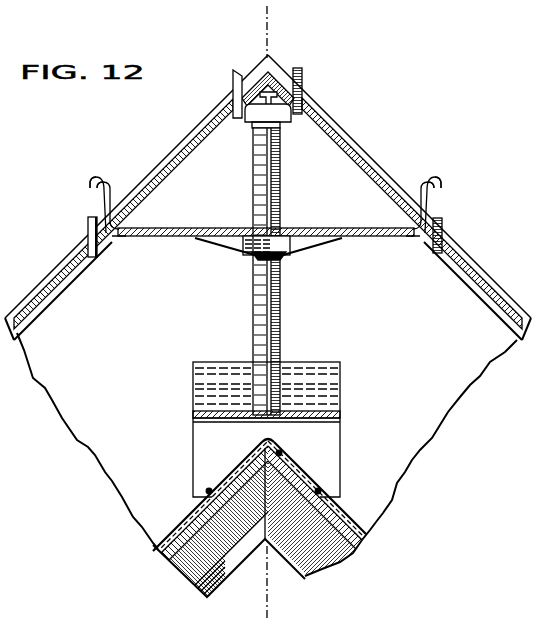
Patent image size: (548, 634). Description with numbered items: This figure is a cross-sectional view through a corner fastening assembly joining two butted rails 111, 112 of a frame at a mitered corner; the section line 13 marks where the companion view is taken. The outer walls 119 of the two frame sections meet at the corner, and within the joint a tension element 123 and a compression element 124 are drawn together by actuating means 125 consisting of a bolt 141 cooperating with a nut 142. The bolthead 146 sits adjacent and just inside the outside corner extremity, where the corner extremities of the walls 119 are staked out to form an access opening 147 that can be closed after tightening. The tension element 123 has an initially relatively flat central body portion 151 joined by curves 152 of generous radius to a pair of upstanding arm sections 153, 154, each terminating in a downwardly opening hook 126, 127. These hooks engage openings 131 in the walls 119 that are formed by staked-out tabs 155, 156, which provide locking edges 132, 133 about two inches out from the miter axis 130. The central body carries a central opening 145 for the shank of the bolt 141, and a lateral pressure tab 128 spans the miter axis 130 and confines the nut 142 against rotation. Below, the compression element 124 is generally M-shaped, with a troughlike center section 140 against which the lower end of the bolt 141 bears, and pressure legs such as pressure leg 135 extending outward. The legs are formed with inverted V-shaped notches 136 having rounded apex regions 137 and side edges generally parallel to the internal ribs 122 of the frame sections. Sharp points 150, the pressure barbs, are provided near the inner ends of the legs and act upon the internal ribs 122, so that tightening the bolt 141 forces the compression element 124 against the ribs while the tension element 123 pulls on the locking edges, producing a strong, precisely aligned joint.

The section line 13- 13 is at (267, 22).
The butted rail 111 is at (460, 394).
The butted rail 112 is at (117, 394).
The outer wall 119 is at (43, 311).
The internal rib 122 is at (366, 526).
The tension element 123 is at (233, 222).
The compression element 124 is at (348, 378).
The actuating means 125 is at (288, 337).
The downwardly opening hook 126 is at (100, 182).
The downwardly opening hook 127 is at (430, 181).
The lateral pressure tab 128 is at (242, 246).
The miter axis 130 is at (264, 322).
The opening 131 is at (108, 248).
The locking edge 132 is at (137, 228).
The locking edge 133 is at (413, 213).
The pressure leg 135 is at (327, 455).
The inverted V-shaped notch 136 is at (279, 452).
The rounded apex region 137 is at (258, 442).
The troughlike center section 140 is at (205, 412).
The bolt 141 is at (276, 170).
The nut 142 is at (280, 258).
The central opening 145 is at (286, 231).
The bolthead 146 is at (284, 108).
The access opening 147 is at (272, 88).
The sharp points 150 is at (207, 490).
The central body portion 151 is at (367, 229).
The curve 152 is at (120, 238).
The upstanding arm section 153 is at (104, 205).
The upstanding arm section 154 is at (428, 198).
The staked-out tab 155 is at (88, 232).
The staked-out tab 156 is at (443, 232).